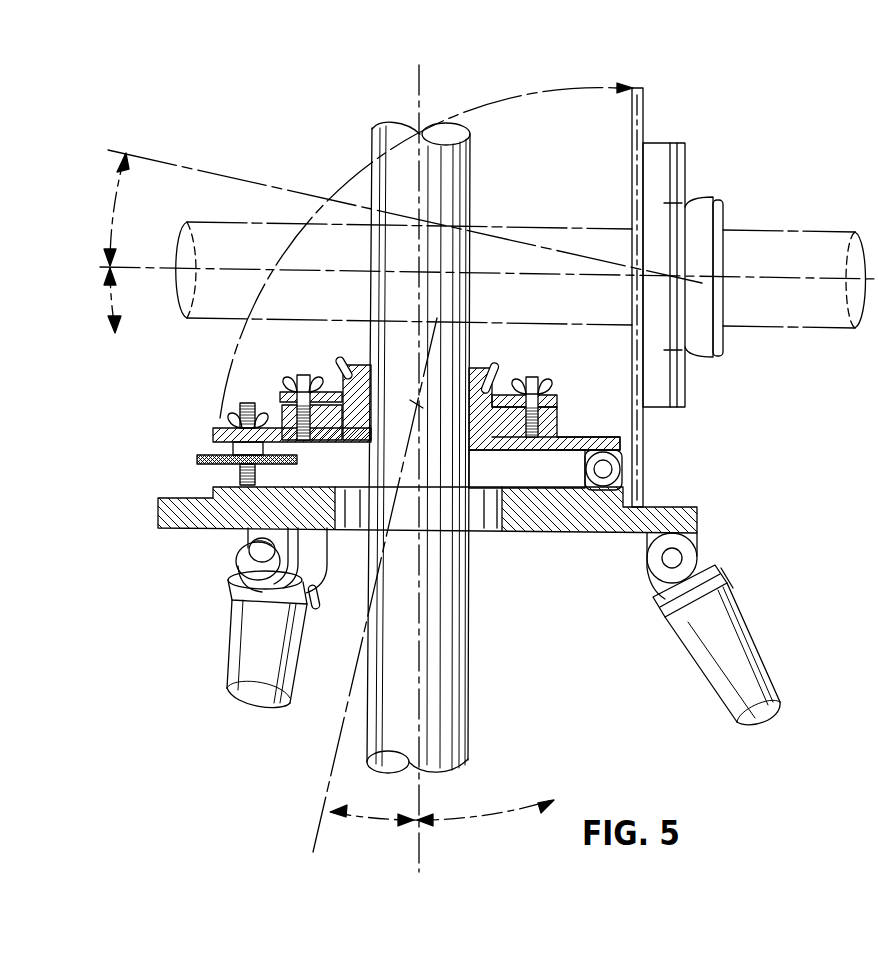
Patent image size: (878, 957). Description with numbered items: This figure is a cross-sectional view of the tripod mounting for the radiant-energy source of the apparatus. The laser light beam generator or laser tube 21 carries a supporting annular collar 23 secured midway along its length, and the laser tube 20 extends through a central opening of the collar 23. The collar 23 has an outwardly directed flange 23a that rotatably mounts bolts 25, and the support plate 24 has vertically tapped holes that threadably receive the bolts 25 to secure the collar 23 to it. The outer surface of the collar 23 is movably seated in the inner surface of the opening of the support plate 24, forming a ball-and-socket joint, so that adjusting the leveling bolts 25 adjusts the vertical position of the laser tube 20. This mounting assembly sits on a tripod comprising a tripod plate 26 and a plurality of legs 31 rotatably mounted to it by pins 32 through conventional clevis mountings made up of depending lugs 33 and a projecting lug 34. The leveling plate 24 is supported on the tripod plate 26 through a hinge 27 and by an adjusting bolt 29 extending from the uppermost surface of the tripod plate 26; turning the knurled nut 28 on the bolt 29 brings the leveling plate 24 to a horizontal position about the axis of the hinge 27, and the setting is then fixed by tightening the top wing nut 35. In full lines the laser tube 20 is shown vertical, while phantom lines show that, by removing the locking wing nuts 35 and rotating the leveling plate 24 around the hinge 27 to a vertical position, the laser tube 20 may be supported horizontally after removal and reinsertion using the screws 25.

The laser tube 20 is at (504, 79).
The laser tube 21 is at (786, 240).
The supporting annular collar 23 is at (490, 372).
The outwardly directed flange 23a is at (501, 380).
The support plate 24 is at (567, 435).
The bolts 25 is at (300, 374).
The tripod plate 26 is at (549, 523).
The hinge 27 is at (566, 468).
The knurled nut 28 is at (198, 455).
The adjusting bolt 29 is at (240, 473).
The legs 31 is at (250, 683).
The pins 32 is at (238, 568).
The depending lugs 33 is at (270, 586).
The projecting lug 34 is at (318, 588).
The wing nut 35 is at (214, 412).